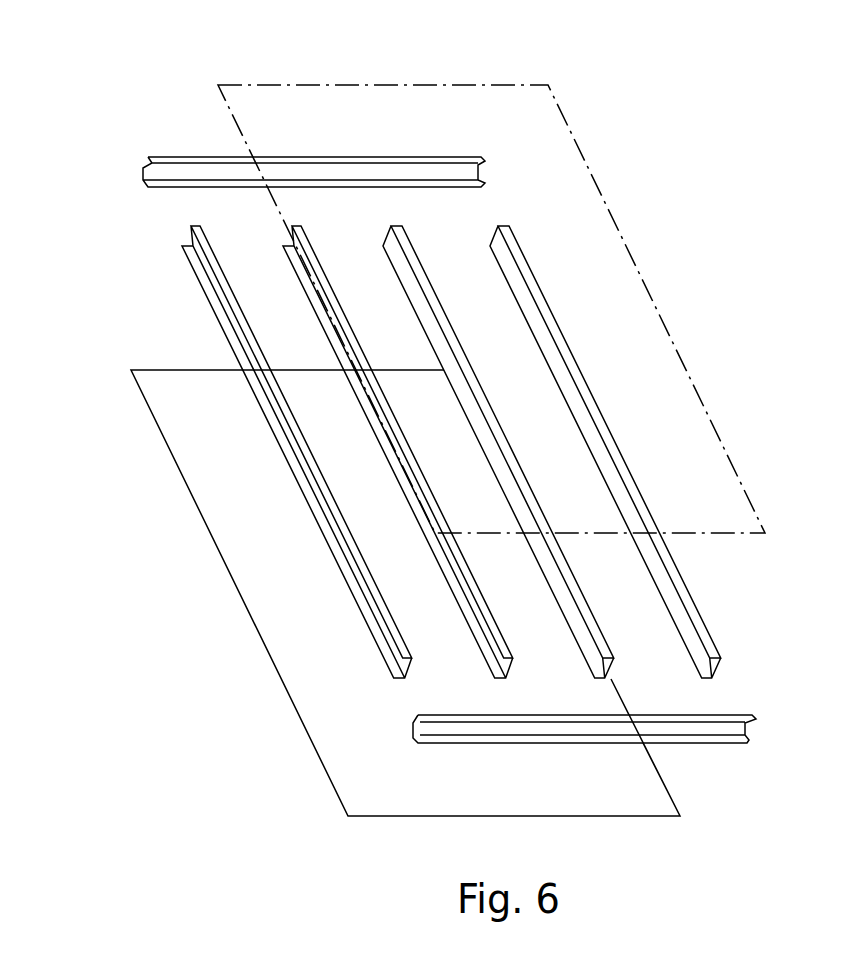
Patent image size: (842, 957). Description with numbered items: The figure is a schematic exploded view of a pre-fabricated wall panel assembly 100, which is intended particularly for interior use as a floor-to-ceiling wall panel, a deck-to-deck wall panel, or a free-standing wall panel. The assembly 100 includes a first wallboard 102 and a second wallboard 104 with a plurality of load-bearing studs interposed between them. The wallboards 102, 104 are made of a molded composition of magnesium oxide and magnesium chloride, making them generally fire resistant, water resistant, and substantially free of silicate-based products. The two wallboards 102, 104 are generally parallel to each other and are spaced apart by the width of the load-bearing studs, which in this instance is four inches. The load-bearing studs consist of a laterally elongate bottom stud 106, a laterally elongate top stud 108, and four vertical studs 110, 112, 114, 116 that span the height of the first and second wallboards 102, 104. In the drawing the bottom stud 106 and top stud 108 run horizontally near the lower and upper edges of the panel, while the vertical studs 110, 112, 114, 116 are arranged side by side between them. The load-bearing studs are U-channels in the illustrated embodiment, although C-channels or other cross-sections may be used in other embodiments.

The pre-fabricated wall panel assembly 100 is at (143, 63).
The first wallboard 102 is at (250, 548).
The second wallboard 104 is at (617, 260).
The bottom stud 106 is at (670, 713).
The top stud 108 is at (152, 174).
The vertical stud 110 is at (206, 289).
The vertical stud 112 is at (313, 300).
The vertical stud 114 is at (408, 276).
The vertical stud 116 is at (530, 315).